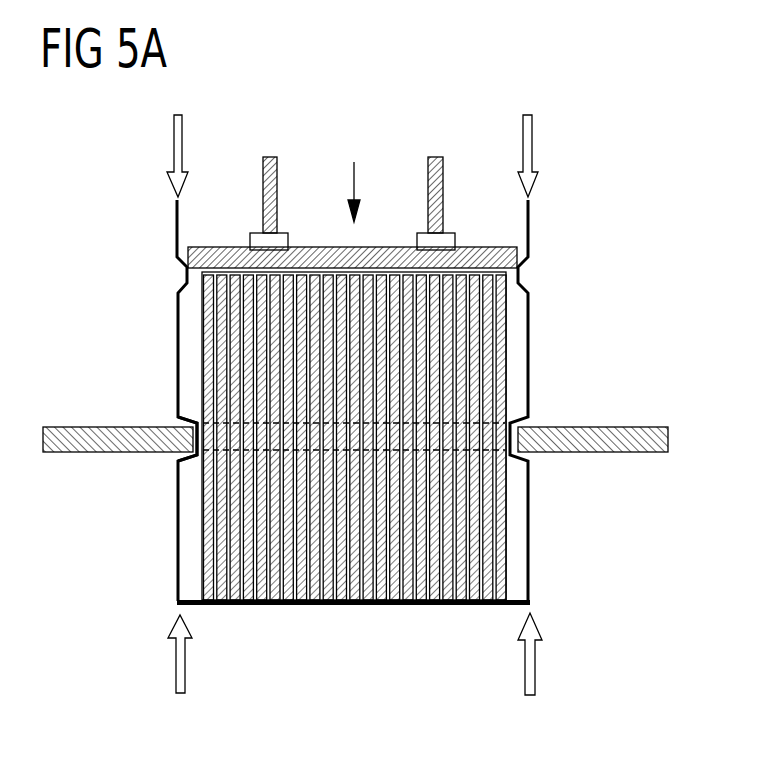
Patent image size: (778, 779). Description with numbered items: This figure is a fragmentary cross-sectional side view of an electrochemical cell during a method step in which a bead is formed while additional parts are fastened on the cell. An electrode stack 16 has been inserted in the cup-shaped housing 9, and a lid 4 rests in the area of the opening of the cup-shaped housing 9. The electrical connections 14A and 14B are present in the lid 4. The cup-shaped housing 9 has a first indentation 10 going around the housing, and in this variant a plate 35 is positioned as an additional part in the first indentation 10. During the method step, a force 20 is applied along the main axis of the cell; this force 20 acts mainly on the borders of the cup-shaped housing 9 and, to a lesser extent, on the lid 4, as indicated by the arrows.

The lid 4 is at (382, 247).
The cup-shaped housing 9 is at (528, 528).
The first indentation 10 is at (178, 458).
The electrical connection 14A is at (272, 156).
The electrical connection 14B is at (435, 156).
The electrode stack 16 is at (358, 605).
The force 20 is at (183, 128).
The plate 35 is at (85, 427).